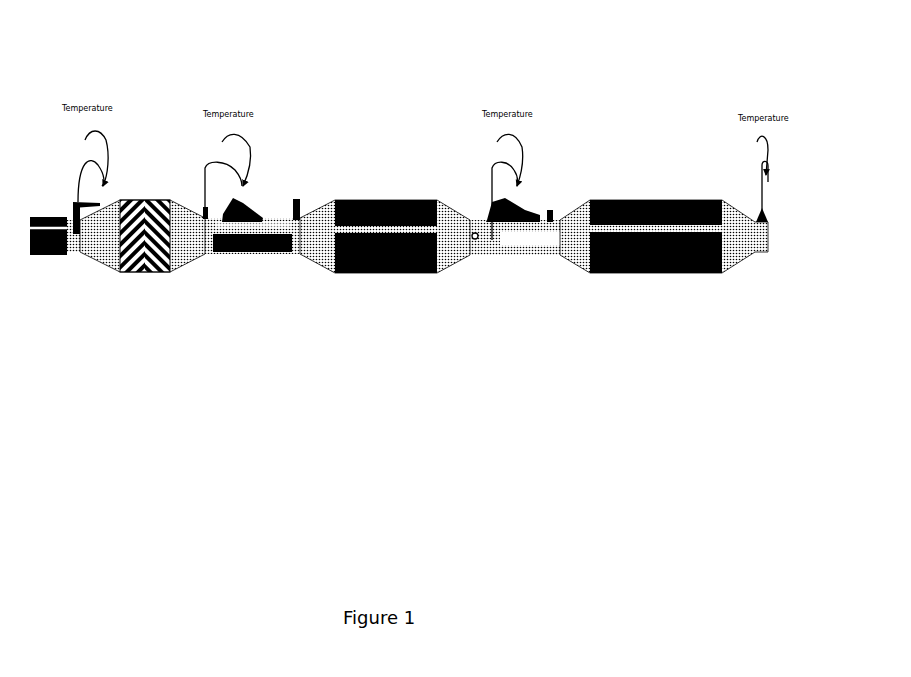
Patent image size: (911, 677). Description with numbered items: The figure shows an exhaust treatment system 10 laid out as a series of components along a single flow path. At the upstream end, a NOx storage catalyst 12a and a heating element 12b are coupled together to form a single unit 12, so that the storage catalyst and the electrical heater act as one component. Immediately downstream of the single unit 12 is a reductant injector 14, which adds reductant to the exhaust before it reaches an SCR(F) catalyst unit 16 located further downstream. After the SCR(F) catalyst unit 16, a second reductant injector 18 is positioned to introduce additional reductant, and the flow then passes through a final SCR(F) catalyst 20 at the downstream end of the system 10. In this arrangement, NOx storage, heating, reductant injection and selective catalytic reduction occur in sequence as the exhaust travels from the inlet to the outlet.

The system 10 is at (27, 126).
The single unit 12 is at (155, 199).
The NOx storage catalyst 12a is at (141, 192).
The heating element 12b is at (163, 191).
The reductant injector 14 is at (270, 195).
The SCR(F) catalyst unit 16 is at (362, 280).
The reductant injector 18 is at (543, 200).
The SCR(F) catalyst 20 is at (655, 283).